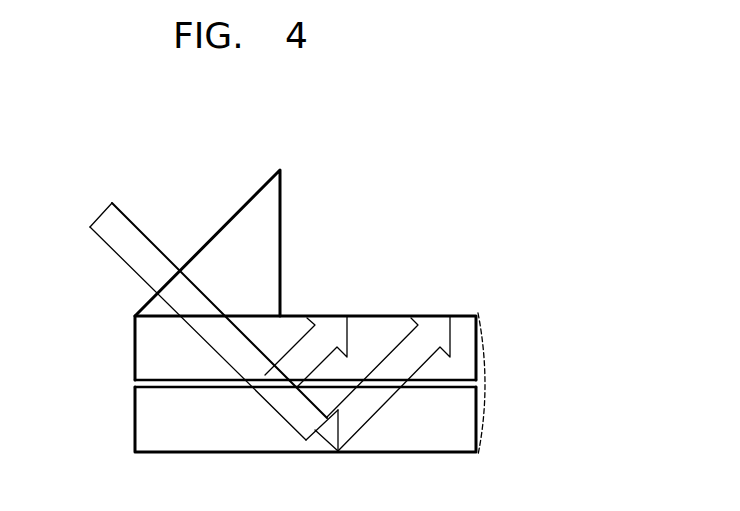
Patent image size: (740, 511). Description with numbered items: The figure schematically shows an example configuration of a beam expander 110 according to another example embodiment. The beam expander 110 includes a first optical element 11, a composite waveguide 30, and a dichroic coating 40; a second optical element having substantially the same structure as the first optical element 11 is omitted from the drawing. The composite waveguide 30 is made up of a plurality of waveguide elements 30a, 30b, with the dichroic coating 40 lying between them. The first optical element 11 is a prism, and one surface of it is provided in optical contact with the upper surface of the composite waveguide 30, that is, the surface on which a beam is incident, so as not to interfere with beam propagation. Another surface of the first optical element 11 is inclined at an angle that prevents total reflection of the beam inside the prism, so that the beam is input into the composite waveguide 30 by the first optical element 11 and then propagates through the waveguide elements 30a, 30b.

The beam expander 110 is at (532, 232).
The first optical element 11 is at (238, 232).
The composite waveguide 30 is at (560, 345).
The waveguide element 30a is at (470, 425).
The waveguide element 30b is at (470, 351).
The dichroic coating 40 is at (135, 382).